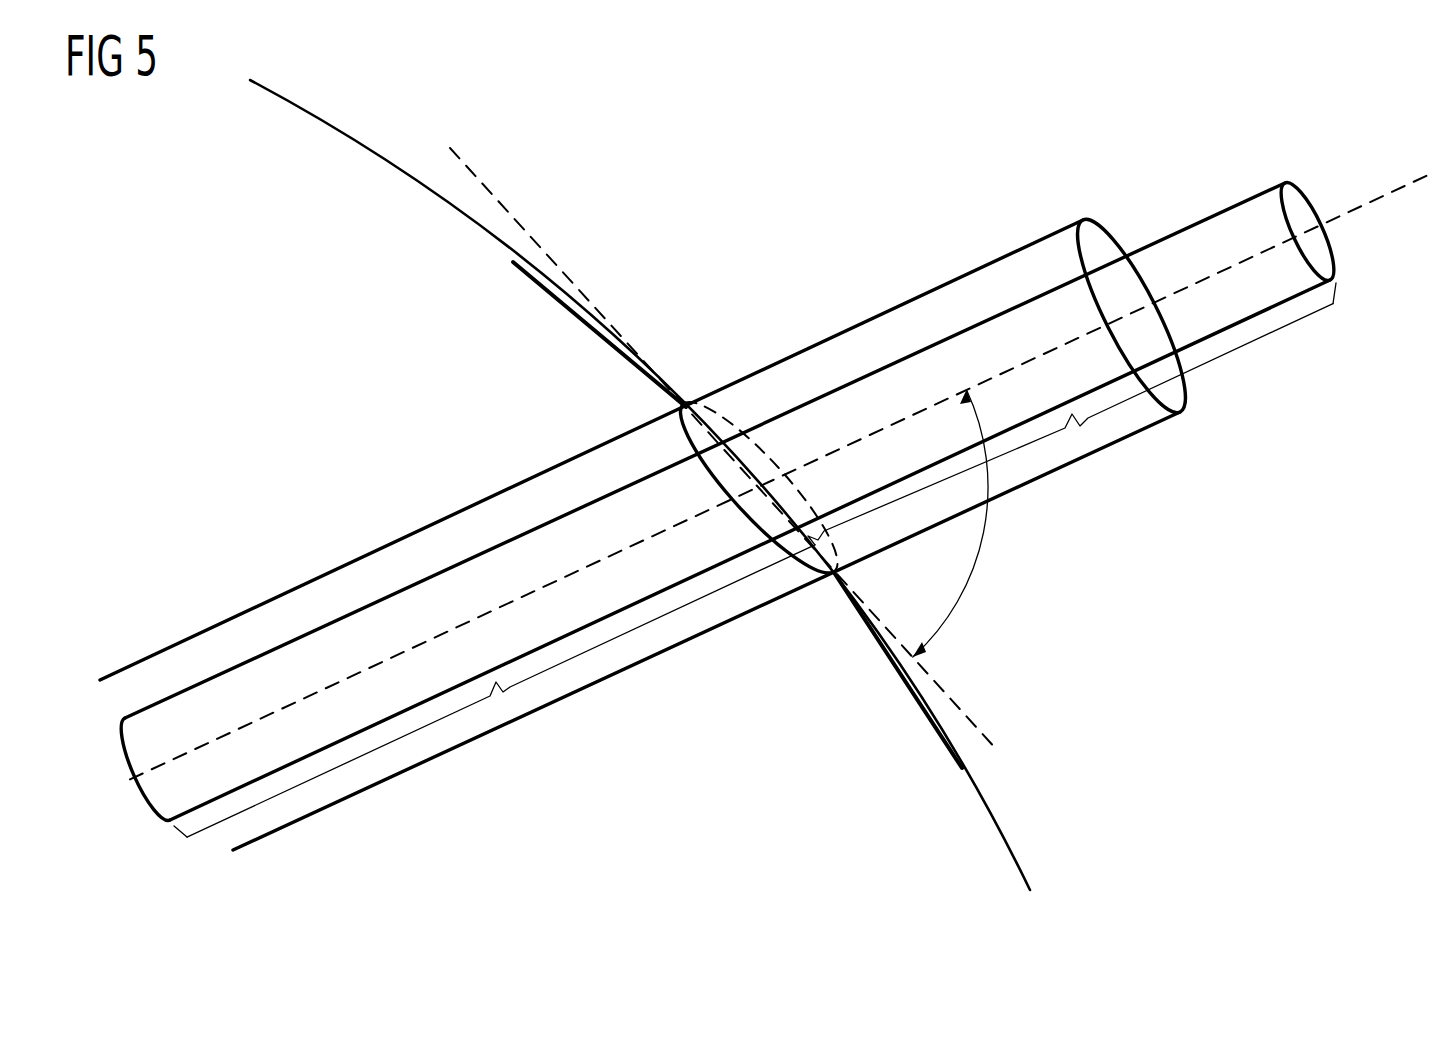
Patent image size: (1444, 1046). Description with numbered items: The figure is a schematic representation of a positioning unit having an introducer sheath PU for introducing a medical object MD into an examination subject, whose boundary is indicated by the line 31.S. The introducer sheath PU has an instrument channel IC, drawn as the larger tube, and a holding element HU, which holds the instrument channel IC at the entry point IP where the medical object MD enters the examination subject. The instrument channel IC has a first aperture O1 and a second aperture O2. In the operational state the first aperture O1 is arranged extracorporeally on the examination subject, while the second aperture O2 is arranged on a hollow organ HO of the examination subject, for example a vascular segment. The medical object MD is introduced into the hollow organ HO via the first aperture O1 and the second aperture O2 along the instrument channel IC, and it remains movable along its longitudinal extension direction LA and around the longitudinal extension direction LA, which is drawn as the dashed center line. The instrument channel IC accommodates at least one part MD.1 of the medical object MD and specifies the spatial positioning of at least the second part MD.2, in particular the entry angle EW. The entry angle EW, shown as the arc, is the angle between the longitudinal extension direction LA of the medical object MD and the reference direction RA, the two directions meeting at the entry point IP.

The curved surface of component 31 31.S is at (490, 238).
The holding element HU is at (532, 268).
The reference direction RA is at (985, 733).
The hollow organ HO is at (385, 546).
The introducer sheath PU is at (822, 342).
The instrument channel IC is at (939, 318).
The second aperture O2 is at (731, 408).
The first aperture O1 is at (1100, 222).
The medical object MD is at (1213, 213).
The longitudinal extension direction LA is at (1396, 187).
The first part of medical object MD.1 is at (499, 705).
The second part of medical object MD.2 is at (1078, 440).
The entry angle EW is at (982, 580).
The entry point IP is at (777, 492).